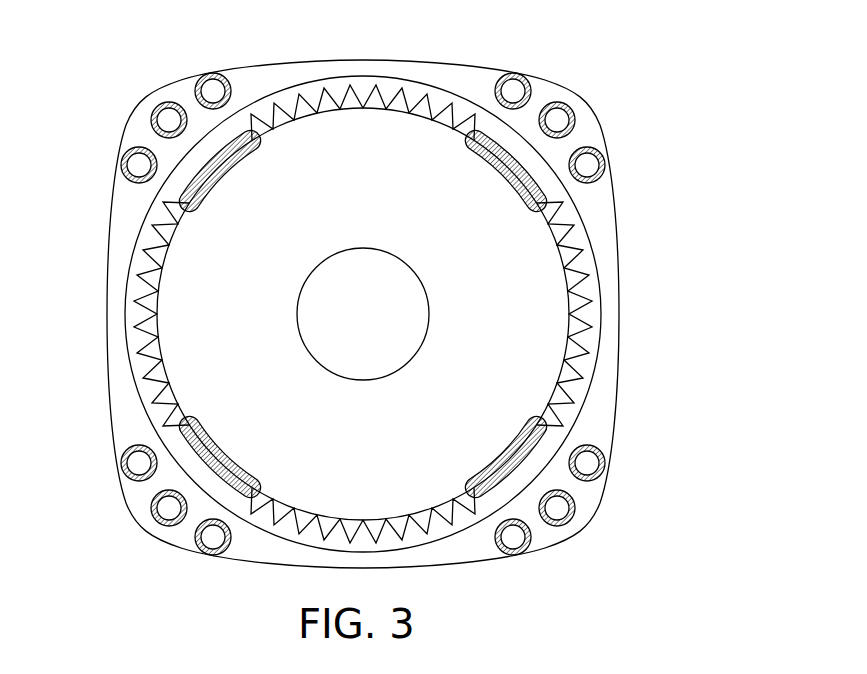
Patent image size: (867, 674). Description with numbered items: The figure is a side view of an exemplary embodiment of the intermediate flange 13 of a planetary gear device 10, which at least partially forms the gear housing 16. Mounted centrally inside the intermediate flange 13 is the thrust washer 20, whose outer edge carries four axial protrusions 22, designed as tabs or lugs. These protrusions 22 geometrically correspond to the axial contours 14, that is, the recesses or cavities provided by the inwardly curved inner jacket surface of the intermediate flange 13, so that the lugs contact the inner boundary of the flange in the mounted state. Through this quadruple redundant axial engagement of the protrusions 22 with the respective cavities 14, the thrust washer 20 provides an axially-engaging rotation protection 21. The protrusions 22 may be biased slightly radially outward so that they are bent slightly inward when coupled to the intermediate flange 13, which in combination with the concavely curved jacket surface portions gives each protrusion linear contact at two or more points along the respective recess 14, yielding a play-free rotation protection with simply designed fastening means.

The planetary gear device 10 is at (397, 293).
The intermediate flange 13 is at (632, 276).
The gear housing 16 is at (363, 314).
The axial contours 14 is at (534, 162).
The thrust washer 20 is at (502, 284).
The axially-engaging rotation protection 21 is at (190, 160).
The axial protrusions 22 is at (205, 471).